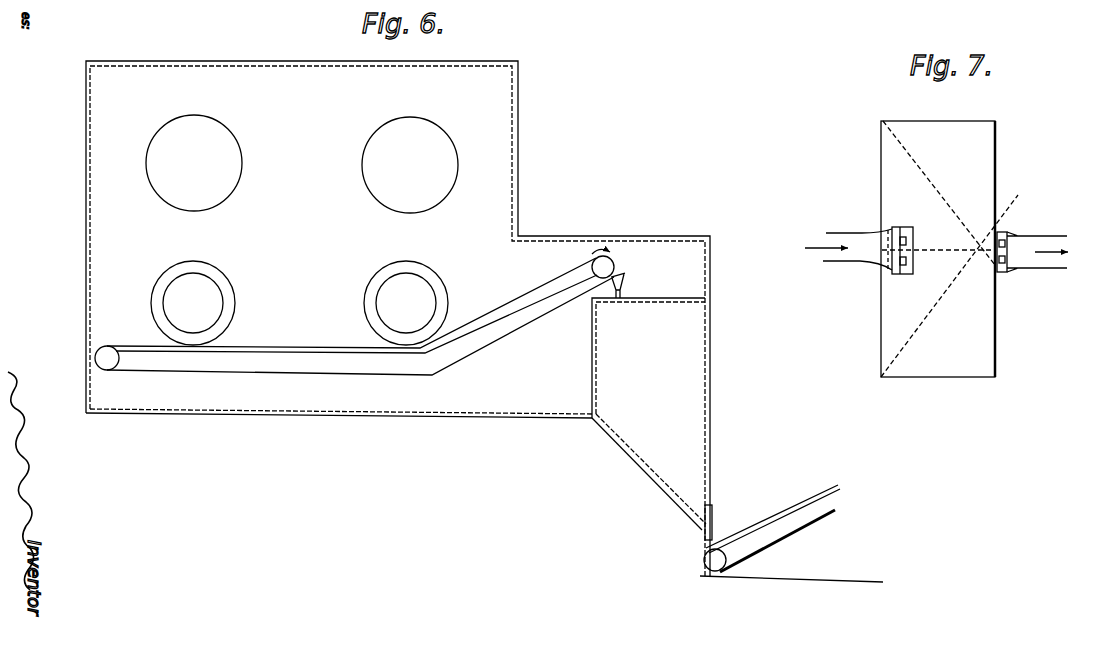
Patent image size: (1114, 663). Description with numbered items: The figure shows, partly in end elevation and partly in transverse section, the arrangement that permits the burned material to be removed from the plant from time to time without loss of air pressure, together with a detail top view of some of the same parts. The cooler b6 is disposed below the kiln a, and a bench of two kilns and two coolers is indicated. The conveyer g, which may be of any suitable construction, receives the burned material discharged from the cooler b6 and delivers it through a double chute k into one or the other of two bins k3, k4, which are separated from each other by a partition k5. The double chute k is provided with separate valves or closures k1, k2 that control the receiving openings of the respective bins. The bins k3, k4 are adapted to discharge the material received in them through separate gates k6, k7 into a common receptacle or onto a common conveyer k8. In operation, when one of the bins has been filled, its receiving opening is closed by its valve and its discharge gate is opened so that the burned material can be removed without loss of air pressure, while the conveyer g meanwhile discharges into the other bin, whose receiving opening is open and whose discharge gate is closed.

In FIG. 6, the kiln a is at (302, 164).
In FIG. 6, the cooler b6 is at (299, 303).
In FIG. 6, the conveyer g is at (480, 351).
In FIG. 7, the conveyer g is at (852, 262).
In FIG. 6, the double chute k is at (624, 282).
In FIG. 7, the double chute k is at (897, 276).
In FIG. 7, the valve or closure k1 is at (908, 240).
In FIG. 7, the valve or closure k2 is at (906, 262).
In FIG. 7, the bin k3 is at (939, 193).
In FIG. 6, the bin k4 is at (690, 468).
In FIG. 7, the bin k4 is at (938, 306).
In FIG. 7, the partition k5 is at (966, 275).
In FIG. 7, the gate k6 is at (1002, 240).
In FIG. 6, the gate k7 is at (716, 528).
In FIG. 7, the gate k7 is at (1003, 262).
In FIG. 6, the common conveyer k8 is at (800, 496).
In FIG. 7, the common conveyer k8 is at (1062, 265).